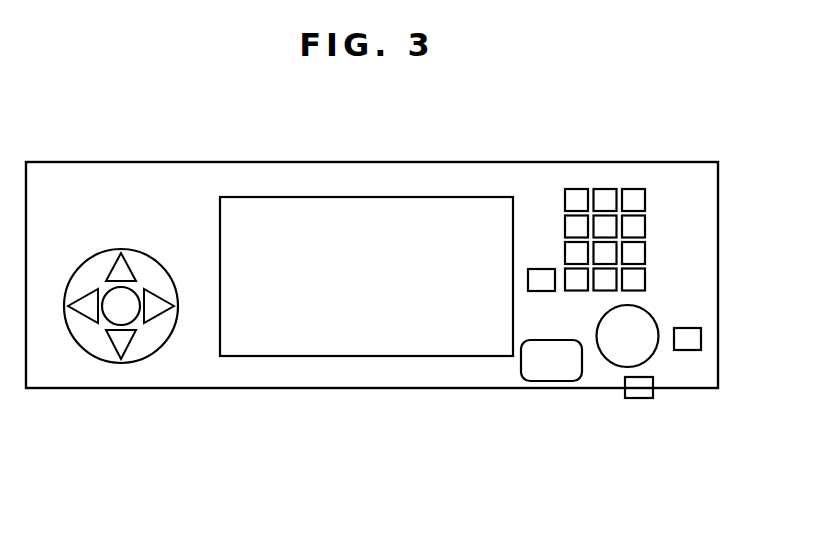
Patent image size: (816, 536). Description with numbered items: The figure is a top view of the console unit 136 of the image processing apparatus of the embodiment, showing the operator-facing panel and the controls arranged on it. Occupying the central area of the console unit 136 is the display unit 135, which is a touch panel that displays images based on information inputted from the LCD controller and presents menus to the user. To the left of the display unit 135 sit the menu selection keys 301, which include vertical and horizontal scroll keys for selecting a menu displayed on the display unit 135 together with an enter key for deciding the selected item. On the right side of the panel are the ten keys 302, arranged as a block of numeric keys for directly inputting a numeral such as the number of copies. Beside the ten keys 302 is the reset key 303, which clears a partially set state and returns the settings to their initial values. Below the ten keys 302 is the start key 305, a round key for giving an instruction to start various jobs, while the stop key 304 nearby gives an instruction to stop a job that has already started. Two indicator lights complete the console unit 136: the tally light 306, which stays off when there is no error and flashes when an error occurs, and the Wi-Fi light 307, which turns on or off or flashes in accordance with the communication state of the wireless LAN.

The console unit 136 is at (250, 162).
The display unit 135 is at (452, 197).
The menu selection keys 301 is at (145, 256).
The ten keys 302 is at (575, 189).
The reset key 303 is at (541, 291).
The stop key 304 is at (690, 350).
The start key 305 is at (603, 357).
The tally light 306 is at (640, 398).
The Wi-Fi light 307 is at (551, 381).